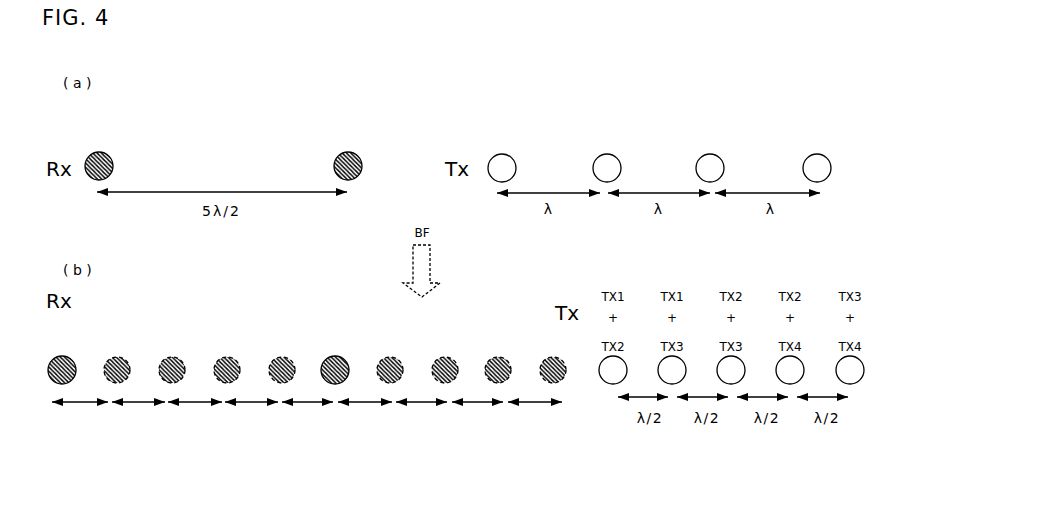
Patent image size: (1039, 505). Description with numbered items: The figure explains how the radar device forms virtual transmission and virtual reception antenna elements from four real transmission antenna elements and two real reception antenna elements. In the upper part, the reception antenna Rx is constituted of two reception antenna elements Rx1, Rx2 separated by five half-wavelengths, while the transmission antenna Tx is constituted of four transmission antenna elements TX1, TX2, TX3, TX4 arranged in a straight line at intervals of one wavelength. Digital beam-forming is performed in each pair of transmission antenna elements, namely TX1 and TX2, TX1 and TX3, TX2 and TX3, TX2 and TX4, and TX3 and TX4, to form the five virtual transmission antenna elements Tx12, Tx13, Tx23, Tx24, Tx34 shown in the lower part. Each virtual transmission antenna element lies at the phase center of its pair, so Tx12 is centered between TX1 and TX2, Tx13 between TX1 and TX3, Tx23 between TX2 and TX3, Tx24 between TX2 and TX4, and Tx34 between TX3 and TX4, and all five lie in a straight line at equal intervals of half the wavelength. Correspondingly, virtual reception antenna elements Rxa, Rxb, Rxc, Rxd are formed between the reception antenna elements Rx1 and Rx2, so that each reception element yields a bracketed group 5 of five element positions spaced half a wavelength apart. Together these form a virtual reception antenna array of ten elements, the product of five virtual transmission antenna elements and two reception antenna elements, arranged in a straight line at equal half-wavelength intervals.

The virtual receiving antenna array 5 is at (319, 406).
The reception antenna element Rx1 is at (99, 156).
The reception antenna element Rx2 is at (348, 156).
The transmission antenna element TX1 is at (502, 157).
The transmission antenna element TX2 is at (607, 157).
The transmission antenna element TX3 is at (710, 157).
The transmission antenna element TX4 is at (817, 157).
The virtual reception antenna element Rxa is at (128, 377).
The virtual reception antenna element Rxb is at (186, 377).
The virtual reception antenna element Rxc is at (238, 377).
The virtual reception antenna element Rxd is at (294, 377).
The virtual transmission antenna element Tx12 is at (616, 384).
The virtual transmission antenna element Tx13 is at (675, 384).
The virtual transmission antenna element Tx23 is at (734, 384).
The virtual transmission antenna element Tx24 is at (793, 384).
The virtual transmission antenna element Tx34 is at (853, 384).